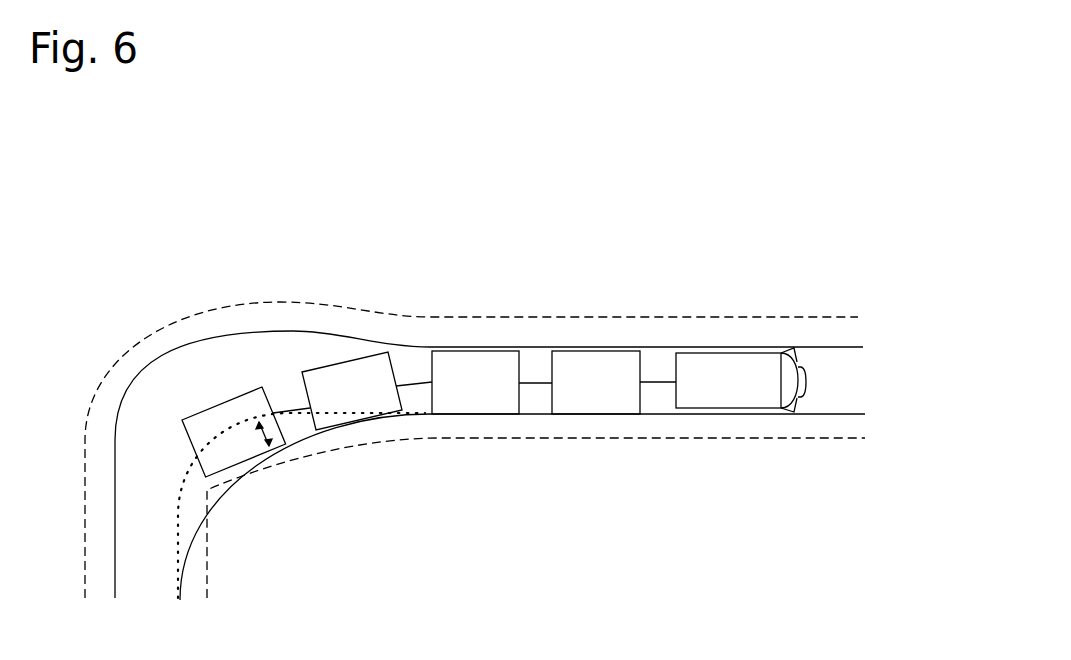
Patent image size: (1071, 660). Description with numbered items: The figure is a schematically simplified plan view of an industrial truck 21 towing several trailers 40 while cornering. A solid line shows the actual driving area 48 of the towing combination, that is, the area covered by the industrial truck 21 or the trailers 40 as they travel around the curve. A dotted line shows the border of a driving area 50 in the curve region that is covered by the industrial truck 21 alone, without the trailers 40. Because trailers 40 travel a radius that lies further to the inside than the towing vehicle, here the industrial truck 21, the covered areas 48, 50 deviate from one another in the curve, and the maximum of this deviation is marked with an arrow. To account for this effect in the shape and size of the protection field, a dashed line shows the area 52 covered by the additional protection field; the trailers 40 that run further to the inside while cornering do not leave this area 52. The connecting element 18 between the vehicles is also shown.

The coupling 18 is at (658, 382).
The industrial truck 21 is at (728, 384).
The trailers 40 is at (335, 363).
The actual driving area 48 is at (240, 335).
The driving area 50 is at (288, 413).
The area covered by the additional protection field 52 is at (195, 318).